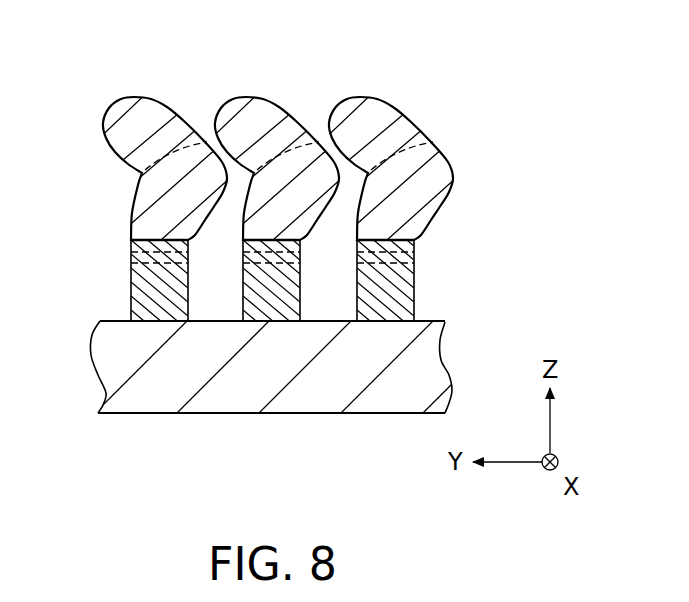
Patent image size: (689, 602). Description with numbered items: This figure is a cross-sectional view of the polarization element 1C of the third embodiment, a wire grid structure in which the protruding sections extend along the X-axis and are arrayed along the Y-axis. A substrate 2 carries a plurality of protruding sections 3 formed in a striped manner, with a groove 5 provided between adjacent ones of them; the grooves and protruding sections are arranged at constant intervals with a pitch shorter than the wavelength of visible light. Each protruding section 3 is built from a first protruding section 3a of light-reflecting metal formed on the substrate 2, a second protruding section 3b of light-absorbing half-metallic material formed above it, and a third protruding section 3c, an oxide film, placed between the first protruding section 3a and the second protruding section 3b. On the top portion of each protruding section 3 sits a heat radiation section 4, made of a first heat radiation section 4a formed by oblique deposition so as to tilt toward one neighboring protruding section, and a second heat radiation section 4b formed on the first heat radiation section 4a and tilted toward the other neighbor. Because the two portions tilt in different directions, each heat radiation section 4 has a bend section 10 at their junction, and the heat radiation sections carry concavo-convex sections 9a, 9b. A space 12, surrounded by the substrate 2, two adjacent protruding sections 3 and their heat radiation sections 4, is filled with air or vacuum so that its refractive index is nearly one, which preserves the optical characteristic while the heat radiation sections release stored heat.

The polarization element 1C is at (442, 87).
The substrate 2 is at (435, 367).
The protruding section 3 is at (497, 273).
The first protruding section 3a is at (415, 300).
The second protruding section 3b is at (415, 245).
The third protruding section 3c is at (415, 257).
The heat radiation section 4 is at (454, 150).
The first heat radiation section 4a is at (427, 205).
The second heat radiation section 4b is at (358, 107).
The groove 5 is at (330, 317).
The concavo-convex section 9a is at (362, 175).
The concavo-convex section 9b is at (332, 92).
The bend section 10 is at (132, 178).
The space 12 is at (215, 255).